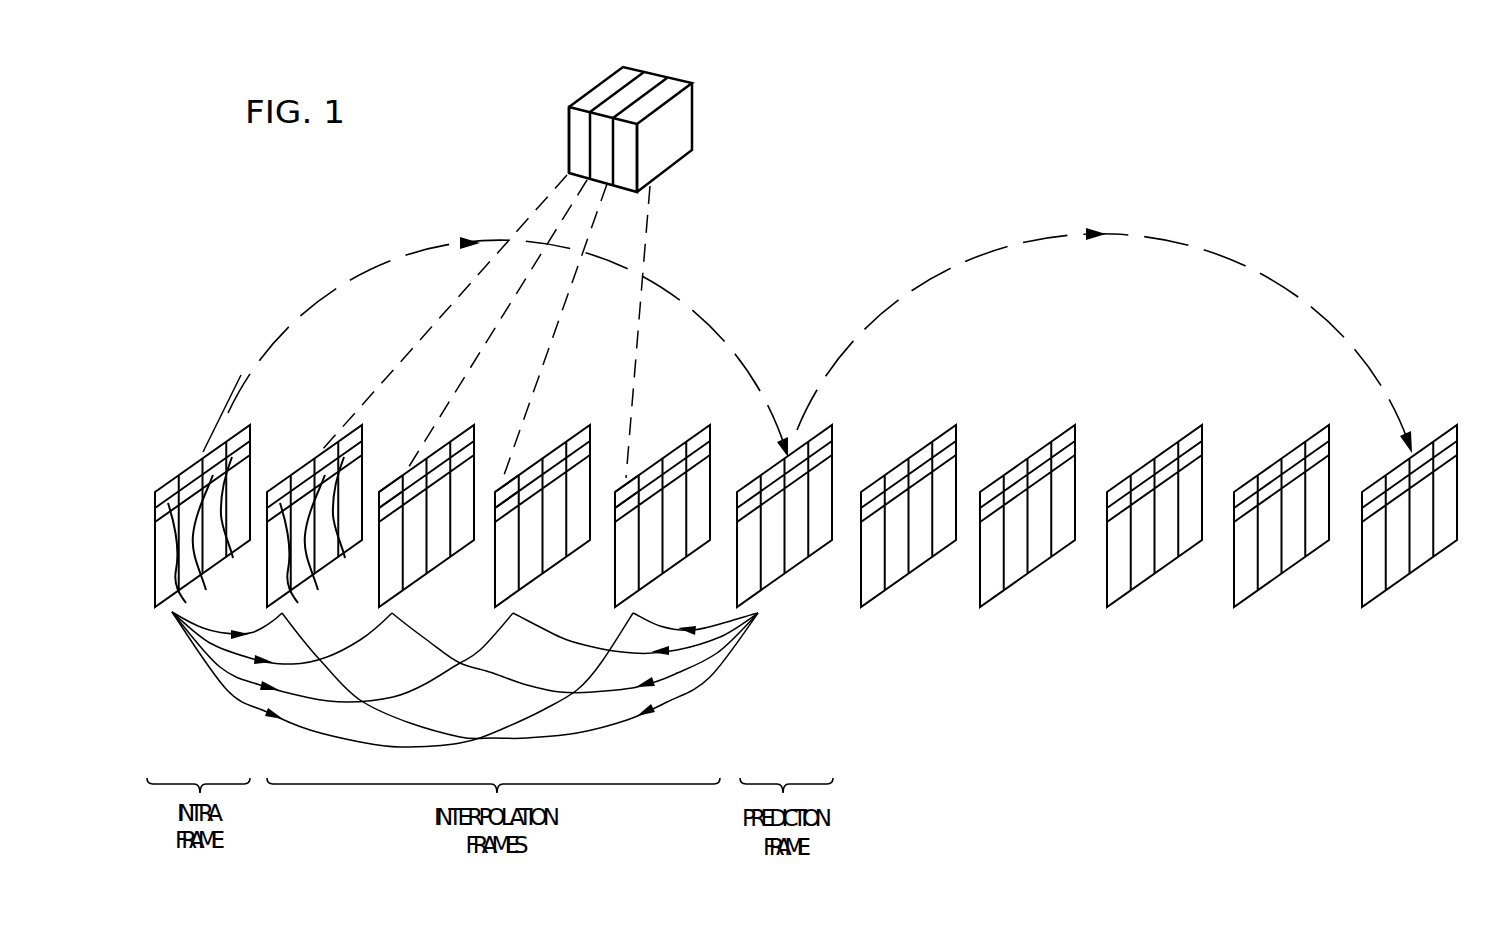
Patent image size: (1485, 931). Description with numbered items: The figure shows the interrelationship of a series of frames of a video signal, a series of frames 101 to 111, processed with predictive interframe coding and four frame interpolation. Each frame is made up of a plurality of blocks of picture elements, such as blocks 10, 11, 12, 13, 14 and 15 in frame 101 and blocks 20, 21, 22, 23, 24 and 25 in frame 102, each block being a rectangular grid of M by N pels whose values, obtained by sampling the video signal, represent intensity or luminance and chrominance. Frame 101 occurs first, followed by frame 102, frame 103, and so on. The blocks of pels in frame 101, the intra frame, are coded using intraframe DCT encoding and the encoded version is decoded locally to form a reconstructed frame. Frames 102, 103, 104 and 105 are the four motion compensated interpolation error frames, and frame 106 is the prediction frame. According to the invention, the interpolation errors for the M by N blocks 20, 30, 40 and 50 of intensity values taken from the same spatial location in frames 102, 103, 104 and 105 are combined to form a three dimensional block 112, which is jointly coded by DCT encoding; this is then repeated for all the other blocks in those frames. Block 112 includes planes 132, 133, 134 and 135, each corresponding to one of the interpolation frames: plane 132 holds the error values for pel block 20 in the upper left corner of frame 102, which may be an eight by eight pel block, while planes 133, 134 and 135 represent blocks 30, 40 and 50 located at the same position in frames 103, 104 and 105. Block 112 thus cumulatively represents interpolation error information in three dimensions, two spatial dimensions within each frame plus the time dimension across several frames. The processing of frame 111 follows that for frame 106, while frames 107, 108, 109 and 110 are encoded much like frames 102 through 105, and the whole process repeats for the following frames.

The block of picture elements 10 is at (172, 480).
The block of picture elements 11 is at (193, 465).
The block of picture elements 12 is at (215, 449).
The block of picture elements 13 is at (187, 563).
The block of picture elements 14 is at (215, 543).
The block of picture elements 15 is at (239, 520).
The block of picture elements 20 is at (282, 483).
The block of picture elements 21 is at (302, 466).
The block of picture elements 22 is at (327, 446).
The block of picture elements 23 is at (300, 606).
The block of picture elements 24 is at (326, 545).
The block of picture elements 25 is at (350, 521).
The block of picture elements 30 is at (393, 484).
The block of picture elements 40 is at (510, 483).
The block of picture elements 50 is at (630, 483).
The frame 101 is at (250, 425).
The frame 102 is at (362, 425).
The frame 103 is at (474, 425).
The frame 104 is at (590, 425).
The frame 105 is at (710, 425).
The frame 106 is at (832, 425).
The frame 107 is at (956, 425).
The frame 108 is at (1075, 425).
The frame 109 is at (1202, 425).
The frame 110 is at (1329, 425).
The frame 111 is at (1457, 425).
The three dimensional block 112 is at (675, 107).
The plane 132 is at (593, 87).
The plane 133 is at (625, 77).
The plane 134 is at (653, 80).
The plane 135 is at (680, 83).